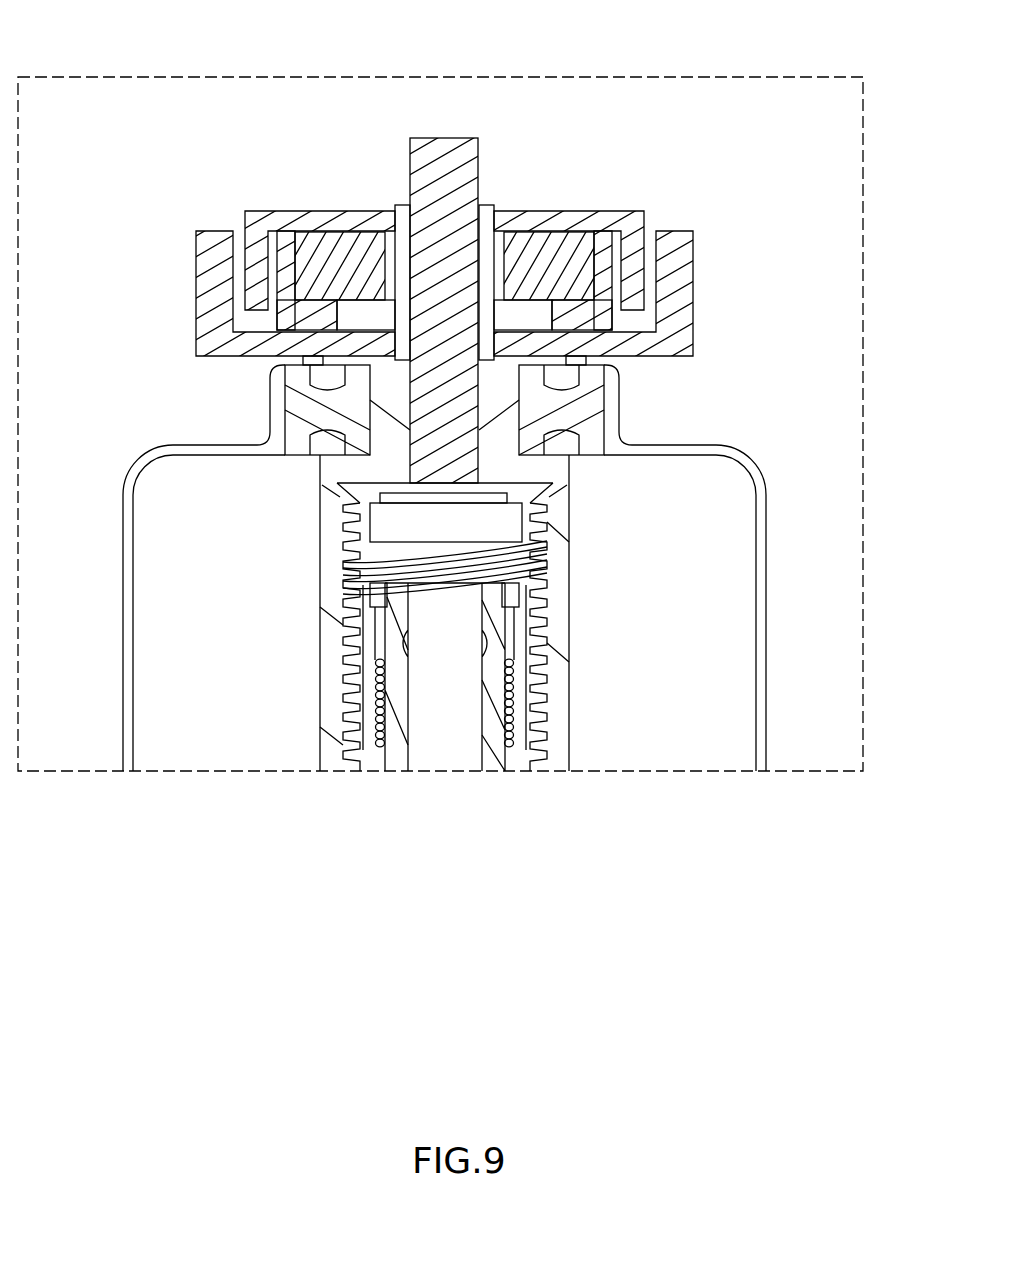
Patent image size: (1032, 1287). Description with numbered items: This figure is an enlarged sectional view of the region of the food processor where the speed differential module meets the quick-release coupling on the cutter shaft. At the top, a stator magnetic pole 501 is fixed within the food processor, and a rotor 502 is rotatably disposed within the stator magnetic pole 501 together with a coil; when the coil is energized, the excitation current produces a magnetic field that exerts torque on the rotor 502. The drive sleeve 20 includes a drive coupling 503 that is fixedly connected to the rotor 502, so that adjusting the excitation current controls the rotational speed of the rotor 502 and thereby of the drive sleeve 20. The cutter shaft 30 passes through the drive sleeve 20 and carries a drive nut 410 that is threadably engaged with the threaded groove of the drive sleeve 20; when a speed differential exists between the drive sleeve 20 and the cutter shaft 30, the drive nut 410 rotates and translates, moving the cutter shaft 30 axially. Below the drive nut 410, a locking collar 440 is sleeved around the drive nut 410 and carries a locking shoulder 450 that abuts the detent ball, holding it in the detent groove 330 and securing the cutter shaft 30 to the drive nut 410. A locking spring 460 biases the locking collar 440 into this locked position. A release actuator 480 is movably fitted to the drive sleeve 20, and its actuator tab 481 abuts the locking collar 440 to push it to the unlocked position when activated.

The drive sleeve 20 is at (555, 562).
The cutter shaft 30 is at (433, 760).
The detent groove 330 is at (402, 760).
The drive nut 410 is at (382, 758).
The locking collar 440 is at (368, 616).
The locking shoulder 450 is at (372, 705).
The locking spring 460 is at (375, 727).
The release actuator 480 is at (427, 145).
The actuator tab 481 is at (542, 522).
The stator magnetic pole 501 is at (668, 232).
The rotor 502 is at (567, 220).
The drive coupling 503 is at (488, 215).